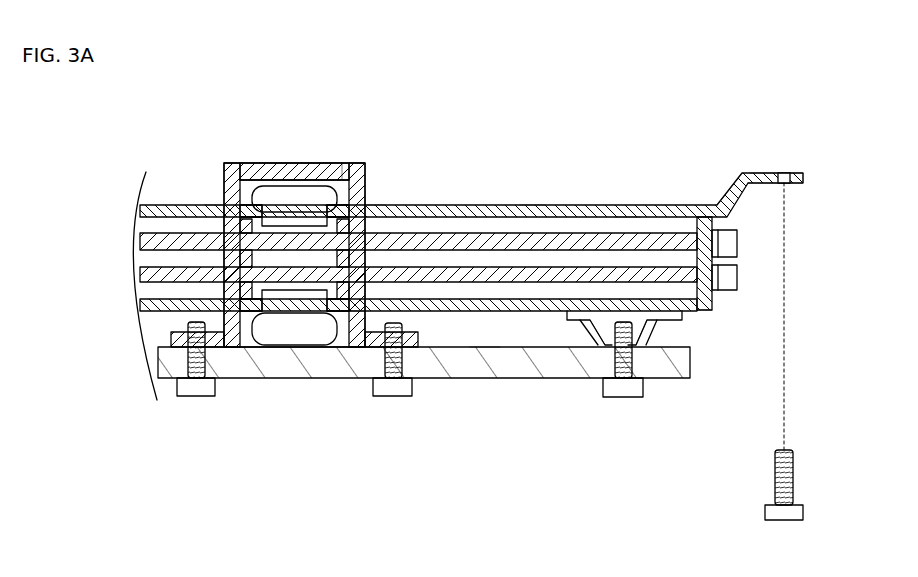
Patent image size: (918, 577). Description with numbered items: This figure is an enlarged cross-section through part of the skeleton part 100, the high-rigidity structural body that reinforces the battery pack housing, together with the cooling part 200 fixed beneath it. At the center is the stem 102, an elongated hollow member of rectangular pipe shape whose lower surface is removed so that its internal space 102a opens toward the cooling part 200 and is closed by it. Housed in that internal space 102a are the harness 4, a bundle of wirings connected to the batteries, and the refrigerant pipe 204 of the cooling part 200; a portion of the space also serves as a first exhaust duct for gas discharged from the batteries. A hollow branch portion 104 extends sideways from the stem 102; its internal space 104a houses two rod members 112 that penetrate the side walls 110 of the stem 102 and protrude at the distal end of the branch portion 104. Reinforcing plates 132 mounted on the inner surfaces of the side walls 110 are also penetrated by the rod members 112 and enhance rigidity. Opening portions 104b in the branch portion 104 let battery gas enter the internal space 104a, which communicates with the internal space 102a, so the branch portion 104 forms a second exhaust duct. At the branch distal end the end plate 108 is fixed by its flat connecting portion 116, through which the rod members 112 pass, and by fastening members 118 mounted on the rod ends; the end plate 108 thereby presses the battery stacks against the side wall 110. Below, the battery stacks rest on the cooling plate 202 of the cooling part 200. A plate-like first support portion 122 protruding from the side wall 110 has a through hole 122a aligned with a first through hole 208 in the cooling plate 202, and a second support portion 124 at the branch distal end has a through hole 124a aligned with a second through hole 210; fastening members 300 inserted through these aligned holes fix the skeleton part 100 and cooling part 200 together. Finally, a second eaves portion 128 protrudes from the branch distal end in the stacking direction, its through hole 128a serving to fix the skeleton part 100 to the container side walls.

The harness 4 is at (342, 163).
The skeleton part 100 is at (748, 175).
The stem 102 is at (297, 163).
The internal space 102a is at (245, 230).
The branch portion 104 is at (553, 205).
The internal space 104a is at (628, 216).
The opening portion 104b is at (530, 205).
The end plate 108 is at (712, 310).
The side wall 110 is at (222, 203).
The rod member 112 is at (574, 230).
The connecting portion 116 is at (713, 220).
The fastening member 118 is at (718, 292).
The first support portion 122 is at (440, 312).
The through hole 122a is at (362, 322).
The second support portion 124 is at (567, 316).
The through hole 124a is at (668, 345).
The second eaves portion 128 is at (805, 178).
The through hole 128a is at (786, 173).
The reinforcing plate 132 is at (277, 235).
The cooling part 200 is at (692, 379).
The cooling plate 202 is at (487, 367).
The refrigerant pipe 204 is at (248, 340).
The first through hole 208 is at (390, 395).
The second through hole 210 is at (612, 380).
The fastening member 300 is at (398, 382).